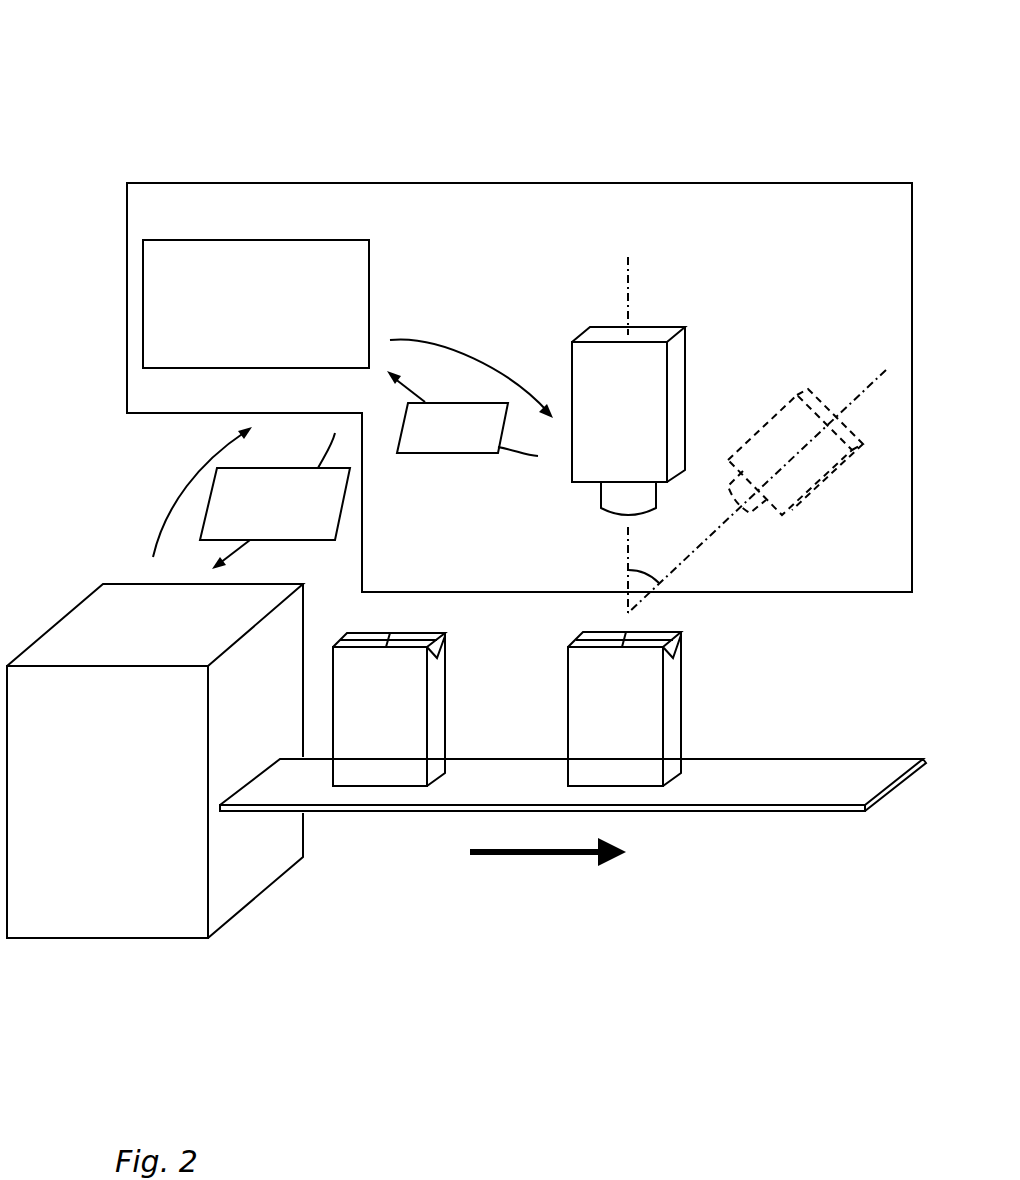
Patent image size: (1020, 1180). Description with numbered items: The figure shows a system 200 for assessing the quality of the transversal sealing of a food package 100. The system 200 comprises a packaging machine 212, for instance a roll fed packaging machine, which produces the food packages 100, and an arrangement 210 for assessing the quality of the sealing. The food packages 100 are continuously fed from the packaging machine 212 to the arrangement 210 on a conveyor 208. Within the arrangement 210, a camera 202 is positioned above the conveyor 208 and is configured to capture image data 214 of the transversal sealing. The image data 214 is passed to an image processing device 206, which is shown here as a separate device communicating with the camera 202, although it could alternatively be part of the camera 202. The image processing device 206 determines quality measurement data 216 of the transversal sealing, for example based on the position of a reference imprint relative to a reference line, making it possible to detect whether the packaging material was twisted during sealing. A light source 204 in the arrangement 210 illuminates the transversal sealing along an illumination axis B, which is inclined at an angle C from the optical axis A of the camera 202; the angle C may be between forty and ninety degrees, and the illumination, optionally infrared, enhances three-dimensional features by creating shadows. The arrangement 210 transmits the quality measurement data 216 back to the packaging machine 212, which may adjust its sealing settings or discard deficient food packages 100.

The system 200 is at (80, 130).
The arrangement 210 is at (603, 183).
The image processing device 206 is at (256, 304).
The camera 202 is at (572, 383).
The light source 204 is at (778, 412).
The image data 214 is at (477, 453).
The quality measurement data 216 is at (340, 523).
The packaging machine 212 is at (155, 761).
The conveyor 208 is at (828, 782).
The food package 100 is at (588, 768).
The optical axis A is at (627, 297).
The illumination axis B is at (872, 386).
The angle C is at (643, 567).